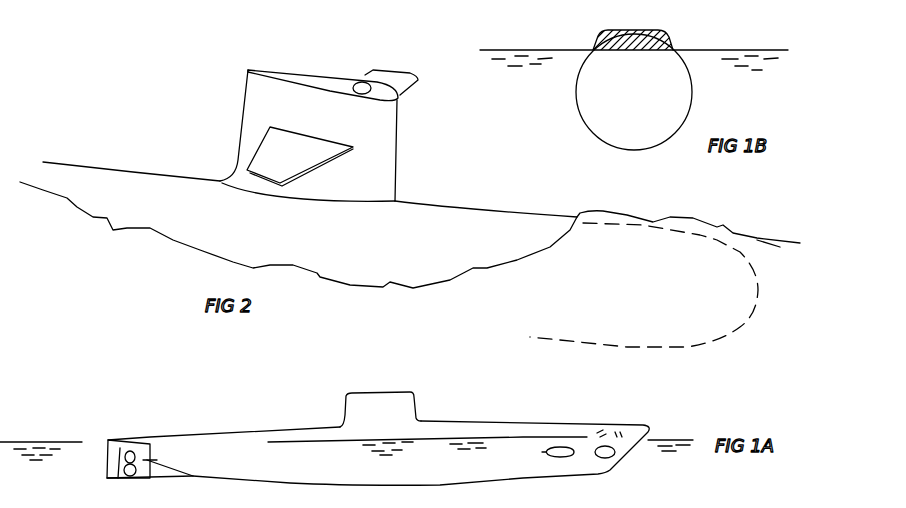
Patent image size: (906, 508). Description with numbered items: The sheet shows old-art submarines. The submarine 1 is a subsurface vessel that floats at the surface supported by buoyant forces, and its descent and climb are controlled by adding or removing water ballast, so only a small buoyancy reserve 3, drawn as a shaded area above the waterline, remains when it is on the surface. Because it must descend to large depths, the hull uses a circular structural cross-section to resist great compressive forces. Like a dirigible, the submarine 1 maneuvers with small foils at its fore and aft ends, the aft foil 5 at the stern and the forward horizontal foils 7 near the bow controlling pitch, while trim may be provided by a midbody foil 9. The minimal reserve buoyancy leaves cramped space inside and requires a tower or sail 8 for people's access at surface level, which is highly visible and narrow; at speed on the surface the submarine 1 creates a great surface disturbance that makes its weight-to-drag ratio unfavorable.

In FIG. 1B, the submarine 1 is at (697, 92).
In FIG. 2, the submarine 1 is at (410, 254).
In FIG. 1A, the submarine 1 is at (510, 458).
In FIG. 1B, the buoyancy reserve 3 is at (673, 49).
In FIG. 1A, the buoyancy reserve 3 is at (470, 430).
In FIG. 1A, the aft foil 5 is at (104, 463).
In FIG. 1A, the forward horizontal foils 7 is at (563, 446).
In FIG. 2, the sail 8 is at (330, 72).
In FIG. 2, the midbody foil 9 is at (246, 148).